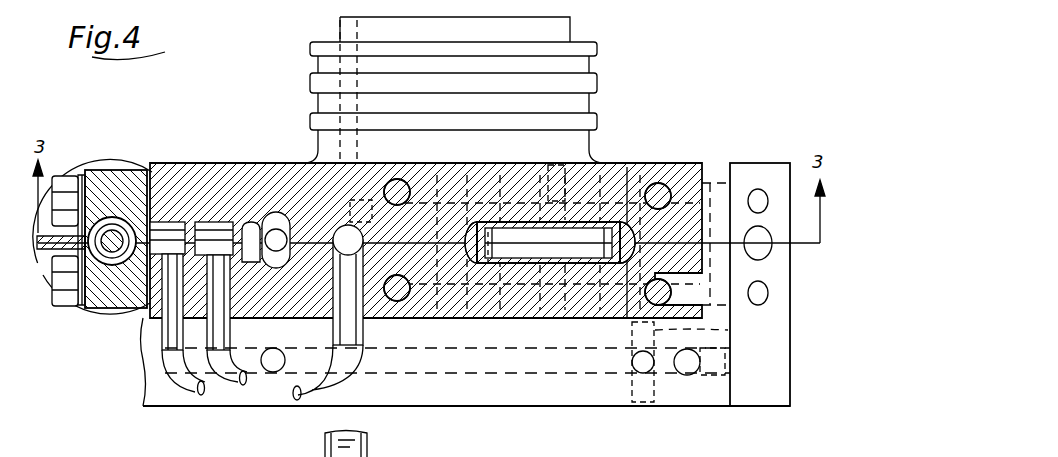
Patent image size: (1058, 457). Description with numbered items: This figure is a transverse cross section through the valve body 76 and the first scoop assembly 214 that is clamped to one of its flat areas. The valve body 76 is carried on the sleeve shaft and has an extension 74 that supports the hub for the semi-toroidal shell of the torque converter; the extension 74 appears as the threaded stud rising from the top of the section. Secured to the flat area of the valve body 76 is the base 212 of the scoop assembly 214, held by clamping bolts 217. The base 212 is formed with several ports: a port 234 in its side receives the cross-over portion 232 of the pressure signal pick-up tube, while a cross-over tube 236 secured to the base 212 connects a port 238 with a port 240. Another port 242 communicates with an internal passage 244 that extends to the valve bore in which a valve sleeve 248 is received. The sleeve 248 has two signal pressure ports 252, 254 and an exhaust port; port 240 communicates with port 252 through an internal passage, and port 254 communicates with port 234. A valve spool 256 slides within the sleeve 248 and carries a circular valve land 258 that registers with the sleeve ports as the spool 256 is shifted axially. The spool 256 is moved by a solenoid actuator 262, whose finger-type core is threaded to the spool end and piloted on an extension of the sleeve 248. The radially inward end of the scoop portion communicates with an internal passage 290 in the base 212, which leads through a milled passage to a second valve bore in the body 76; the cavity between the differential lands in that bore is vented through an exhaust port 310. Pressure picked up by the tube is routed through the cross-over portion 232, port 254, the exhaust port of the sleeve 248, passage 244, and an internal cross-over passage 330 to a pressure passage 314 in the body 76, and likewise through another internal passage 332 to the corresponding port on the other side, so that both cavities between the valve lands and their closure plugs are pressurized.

The extension 74 is at (586, 68).
The valve body 76 is at (782, 270).
The base 212 is at (700, 172).
The first scoop assembly 214 is at (545, 262).
The clamping bolts 217 is at (410, 188).
The cross-over portion 232 is at (232, 372).
The port 234 is at (262, 335).
The cross-over tube 236 is at (368, 336).
The port 238 is at (366, 200).
The port 240 is at (170, 222).
The port 242 is at (281, 212).
The internal passage 244 is at (256, 222).
The valve sleeve 248 is at (95, 170).
The signal pressure port 252 is at (172, 190).
The signal pressure port 254 is at (210, 200).
The valve spool 256 is at (105, 278).
The circular valve land 258 is at (116, 262).
The solenoid actuator 262 is at (118, 163).
The internal passage 290 is at (490, 265).
The exhaust port 310 is at (560, 167).
The pressure passage 314 is at (730, 340).
The internal cross-over passage 330 is at (335, 380).
The internal passage 332 is at (695, 368).